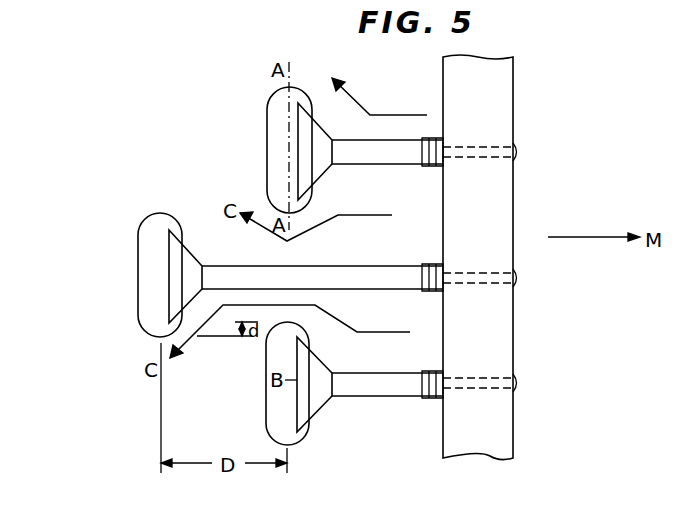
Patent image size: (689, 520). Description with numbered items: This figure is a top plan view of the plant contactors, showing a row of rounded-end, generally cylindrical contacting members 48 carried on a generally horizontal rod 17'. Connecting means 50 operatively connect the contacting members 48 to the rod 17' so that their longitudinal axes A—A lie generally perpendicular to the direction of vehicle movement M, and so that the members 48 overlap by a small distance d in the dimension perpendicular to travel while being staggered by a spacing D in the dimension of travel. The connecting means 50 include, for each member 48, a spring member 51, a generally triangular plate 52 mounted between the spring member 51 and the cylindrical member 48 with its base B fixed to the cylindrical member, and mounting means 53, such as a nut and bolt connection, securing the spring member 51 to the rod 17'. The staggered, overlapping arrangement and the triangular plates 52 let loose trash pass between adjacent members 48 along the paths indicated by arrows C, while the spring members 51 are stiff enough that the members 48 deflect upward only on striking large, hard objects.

The rod 17' is at (505, 257).
The contacting member 48 is at (276, 120).
The connecting means 50 is at (420, 100).
The spring member 51 is at (360, 271).
The triangular plate 52 is at (315, 165).
The mounting means 53 is at (429, 398).